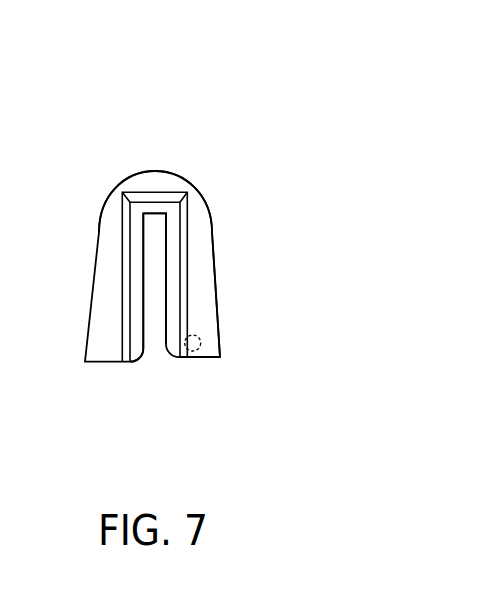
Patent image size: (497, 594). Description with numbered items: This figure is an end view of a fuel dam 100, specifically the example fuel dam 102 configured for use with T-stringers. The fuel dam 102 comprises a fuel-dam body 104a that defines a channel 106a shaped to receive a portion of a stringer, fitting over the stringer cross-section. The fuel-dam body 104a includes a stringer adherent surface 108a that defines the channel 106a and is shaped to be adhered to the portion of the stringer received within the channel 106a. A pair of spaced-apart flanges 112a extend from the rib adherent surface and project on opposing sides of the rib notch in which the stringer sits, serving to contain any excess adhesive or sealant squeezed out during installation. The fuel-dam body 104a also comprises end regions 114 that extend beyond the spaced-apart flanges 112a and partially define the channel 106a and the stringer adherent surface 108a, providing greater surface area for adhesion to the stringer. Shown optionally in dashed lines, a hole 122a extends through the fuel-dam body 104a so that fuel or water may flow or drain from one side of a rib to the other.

The fuel dam 100 is at (298, 42).
The fuel dam for use with T-stringers 102 is at (233, 108).
The fuel-dam body 104a is at (133, 170).
The channel 106a is at (153, 340).
The stringer adherent surface 108a is at (152, 310).
The spaced-apart flanges 112a is at (212, 252).
The end regions 114 is at (180, 232).
The hole 122a is at (202, 337).